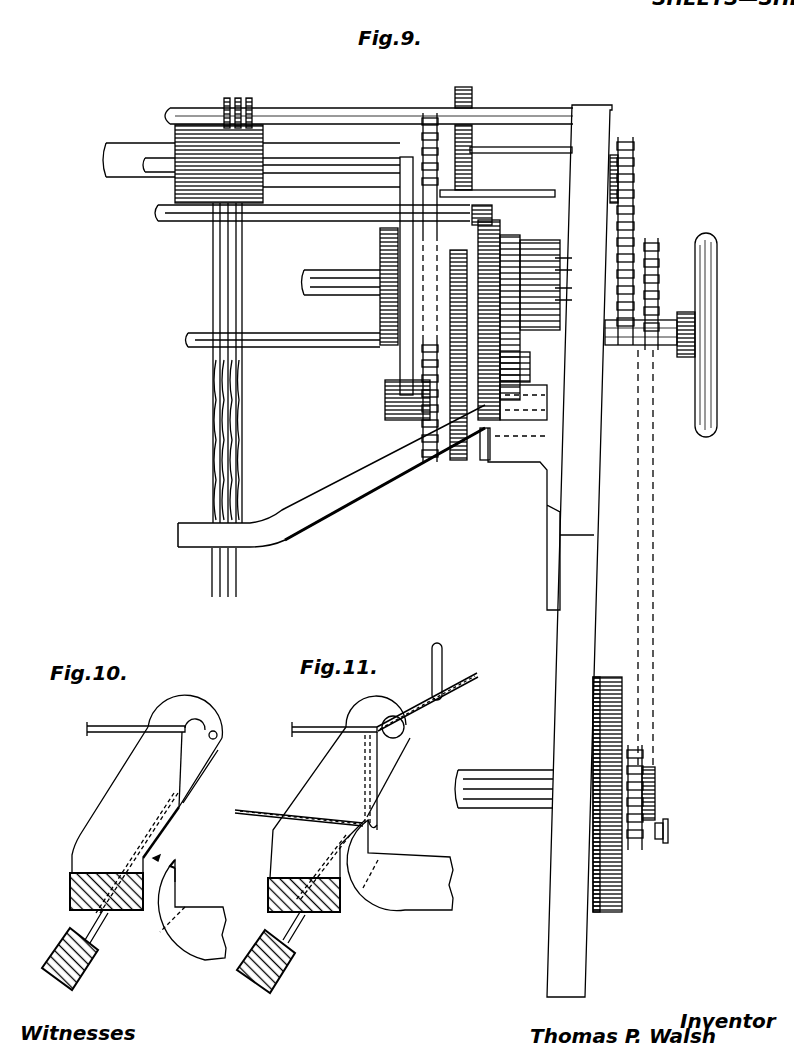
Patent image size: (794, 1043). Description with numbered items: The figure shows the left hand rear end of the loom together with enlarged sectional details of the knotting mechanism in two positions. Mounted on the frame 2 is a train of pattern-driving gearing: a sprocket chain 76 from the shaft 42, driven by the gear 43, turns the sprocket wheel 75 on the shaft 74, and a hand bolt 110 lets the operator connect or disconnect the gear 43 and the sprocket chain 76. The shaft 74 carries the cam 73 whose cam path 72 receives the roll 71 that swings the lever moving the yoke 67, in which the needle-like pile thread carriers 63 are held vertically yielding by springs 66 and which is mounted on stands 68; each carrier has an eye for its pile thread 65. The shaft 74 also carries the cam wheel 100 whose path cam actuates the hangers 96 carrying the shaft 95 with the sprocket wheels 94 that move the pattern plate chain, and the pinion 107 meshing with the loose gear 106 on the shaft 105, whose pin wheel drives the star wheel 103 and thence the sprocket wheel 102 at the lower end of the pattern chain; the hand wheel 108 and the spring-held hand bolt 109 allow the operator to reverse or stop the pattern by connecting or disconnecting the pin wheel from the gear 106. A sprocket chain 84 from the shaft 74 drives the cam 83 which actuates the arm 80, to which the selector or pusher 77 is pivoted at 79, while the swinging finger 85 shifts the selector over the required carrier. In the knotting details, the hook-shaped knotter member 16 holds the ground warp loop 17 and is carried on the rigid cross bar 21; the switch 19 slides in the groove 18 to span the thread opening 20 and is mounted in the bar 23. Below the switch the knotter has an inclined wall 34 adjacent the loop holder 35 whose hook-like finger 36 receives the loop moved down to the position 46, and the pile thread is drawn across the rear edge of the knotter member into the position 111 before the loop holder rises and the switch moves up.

In FIG. 9, the frame 2 is at (552, 710).
In FIG. 10, the hook-shaped portion of the knotter 16 is at (112, 775).
In FIG. 11, the hook-shaped portion of the knotter 16 is at (318, 770).
In FIG. 10, the loop of the ground warp 17 is at (98, 726).
In FIG. 11, the loop of the ground warp 17 is at (300, 727).
In FIG. 10, the groove or passage 18 is at (158, 822).
In FIG. 10, the switch 19 is at (206, 766).
In FIG. 11, the switch 19 is at (392, 770).
In FIG. 10, the thread opening 20 is at (205, 722).
In FIG. 11, the thread opening 20 is at (406, 724).
In FIG. 10, the cross bar 21 is at (70, 886).
In FIG. 11, the cross bar 21 is at (345, 912).
In FIG. 10, the bar 23 is at (55, 955).
In FIG. 11, the bar 23 is at (270, 993).
In FIG. 10, the inclined wall 34 is at (176, 832).
In FIG. 11, the inclined wall 34 is at (340, 845).
In FIG. 10, the second hook-shaped member 35 is at (185, 943).
In FIG. 11, the second hook-shaped member 35 is at (452, 888).
In FIG. 10, the loop holder 36 is at (178, 864).
In FIG. 11, the loop holder 36 is at (378, 822).
In FIG. 9, the shaft 42 is at (500, 808).
In FIG. 9, the gear 43 is at (625, 882).
In FIG. 10, the position 46 is at (177, 870).
In FIG. 9, the pile thread carrier 63 is at (238, 578).
In FIG. 11, the pile thread carrier 63 is at (443, 665).
In FIG. 11, the pile thread 65 is at (262, 810).
In FIG. 9, the spring 66 is at (212, 460).
In FIG. 9, the yoke 67 is at (185, 535).
In FIG. 9, the stand 68 is at (536, 462).
In FIG. 9, the roll 71 is at (530, 366).
In FIG. 9, the cam path 72 is at (522, 236).
In FIG. 9, the cam 73 is at (548, 236).
In FIG. 9, the shaft 74 is at (320, 270).
In FIG. 9, the sprocket wheel 75 is at (656, 248).
In FIG. 9, the sprocket chain 76 is at (656, 518).
In FIG. 9, the pusher or actuator 77 is at (222, 274).
In FIG. 9, the pivot 79 is at (158, 221).
In FIG. 9, the arm 80 is at (480, 205).
In FIG. 9, the cam 83 is at (472, 95).
In FIG. 9, the sprocket chain 84 is at (633, 148).
In FIG. 9, the swinging finger 85 is at (248, 100).
In FIG. 9, the sprocket wheel 94 is at (428, 130).
In FIG. 9, the shaft 95 is at (155, 176).
In FIG. 9, the hanger 96 is at (400, 362).
In FIG. 9, the cam wheel 100 is at (380, 315).
In FIG. 9, the sprocket wheel 102 is at (432, 462).
In FIG. 9, the star wheel 103 is at (456, 465).
In FIG. 9, the shaft 105 is at (665, 320).
In FIG. 9, the loose gear 106 is at (486, 452).
In FIG. 9, the pinion 107 is at (490, 225).
In FIG. 9, the hand wheel 108 is at (717, 420).
In FIG. 9, the hand bolt 109 is at (530, 382).
In FIG. 9, the hand bolt 110 is at (668, 830).
In FIG. 10, the position 111 is at (171, 847).